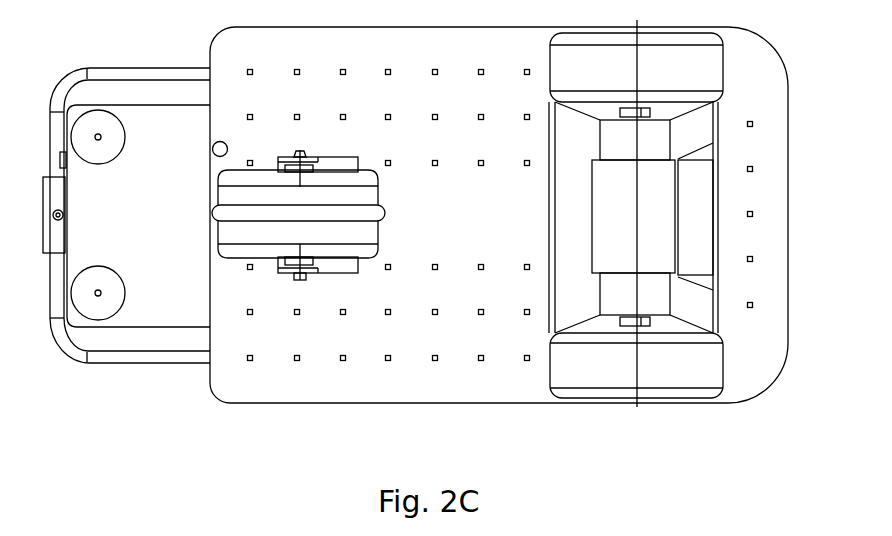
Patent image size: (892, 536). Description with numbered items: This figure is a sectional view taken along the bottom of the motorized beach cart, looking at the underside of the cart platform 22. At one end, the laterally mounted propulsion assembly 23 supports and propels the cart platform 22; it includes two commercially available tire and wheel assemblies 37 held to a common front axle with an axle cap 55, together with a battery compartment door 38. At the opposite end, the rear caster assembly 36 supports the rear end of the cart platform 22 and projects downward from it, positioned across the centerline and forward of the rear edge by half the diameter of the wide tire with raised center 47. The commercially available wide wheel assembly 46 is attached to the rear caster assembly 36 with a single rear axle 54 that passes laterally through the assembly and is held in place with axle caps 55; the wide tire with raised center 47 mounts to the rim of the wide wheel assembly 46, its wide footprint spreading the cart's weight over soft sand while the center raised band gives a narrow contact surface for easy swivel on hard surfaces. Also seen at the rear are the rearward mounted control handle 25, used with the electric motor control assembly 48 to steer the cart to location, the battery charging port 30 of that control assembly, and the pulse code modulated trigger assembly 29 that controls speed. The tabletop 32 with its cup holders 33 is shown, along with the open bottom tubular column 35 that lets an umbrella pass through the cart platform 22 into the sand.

The cart platform 22 is at (225, 380).
The propulsion assembly 23 is at (573, 218).
The control handle 25 is at (110, 70).
The pulse code modulated trigger assembly 29 is at (67, 163).
The battery charging port 30 is at (65, 213).
The tabletop 32 is at (145, 117).
The cup holders 33 is at (112, 150).
The open bottom tubular column 35 is at (213, 146).
The rear caster assembly 36 is at (357, 157).
The tire and wheel assemblies 37 is at (725, 70).
The battery compartment door 38 is at (718, 223).
The wide wheel assembly 46 is at (290, 262).
The wide tire with raised center 47 is at (372, 198).
The electric motor control assembly 48 is at (62, 240).
The rear axle 54 is at (303, 270).
The axle caps 55 is at (300, 150).